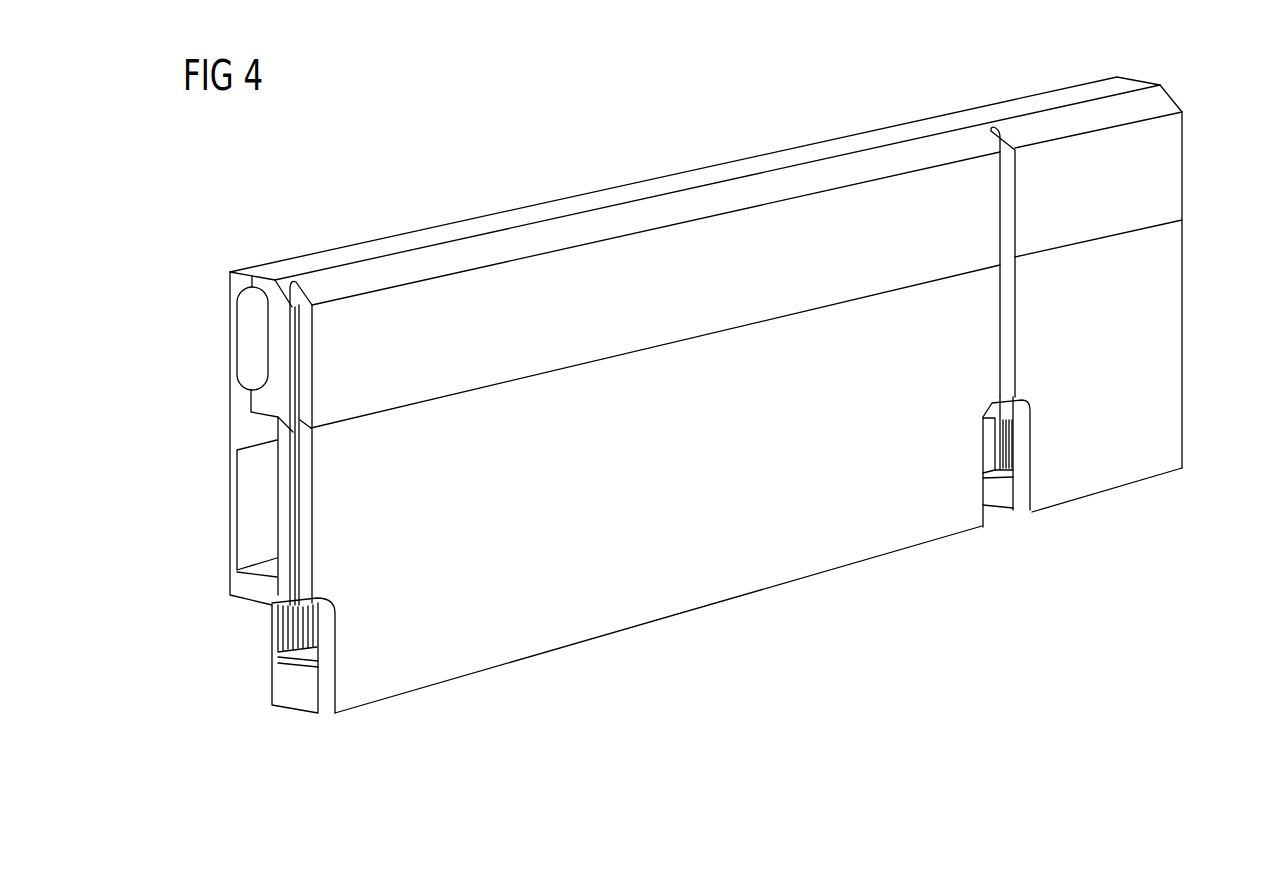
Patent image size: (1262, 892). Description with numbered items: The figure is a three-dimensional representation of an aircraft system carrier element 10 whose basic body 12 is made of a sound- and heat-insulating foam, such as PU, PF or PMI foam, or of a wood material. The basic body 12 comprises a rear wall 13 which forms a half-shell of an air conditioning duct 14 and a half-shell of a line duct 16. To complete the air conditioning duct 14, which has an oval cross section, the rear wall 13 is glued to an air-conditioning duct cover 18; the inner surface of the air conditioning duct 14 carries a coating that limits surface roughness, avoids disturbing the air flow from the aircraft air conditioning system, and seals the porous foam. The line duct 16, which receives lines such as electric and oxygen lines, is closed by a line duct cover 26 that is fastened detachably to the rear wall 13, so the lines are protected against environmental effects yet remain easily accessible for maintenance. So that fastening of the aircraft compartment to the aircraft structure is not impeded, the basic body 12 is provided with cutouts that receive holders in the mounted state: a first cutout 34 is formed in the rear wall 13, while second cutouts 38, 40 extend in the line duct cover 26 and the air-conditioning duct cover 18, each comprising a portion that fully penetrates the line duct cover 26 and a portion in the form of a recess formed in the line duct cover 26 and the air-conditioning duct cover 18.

The aircraft system carrier element 10 is at (1174, 163).
The basic body 12 is at (1174, 343).
The rear wall 13 is at (237, 283).
The air conditioning duct 14 is at (255, 340).
The line duct 16 is at (255, 490).
The air-conditioning duct cover 18 is at (488, 280).
The line duct cover 26 is at (745, 572).
The first cutout 34 is at (278, 622).
The second cutout 38 is at (327, 685).
The second cutout 40 is at (1025, 497).